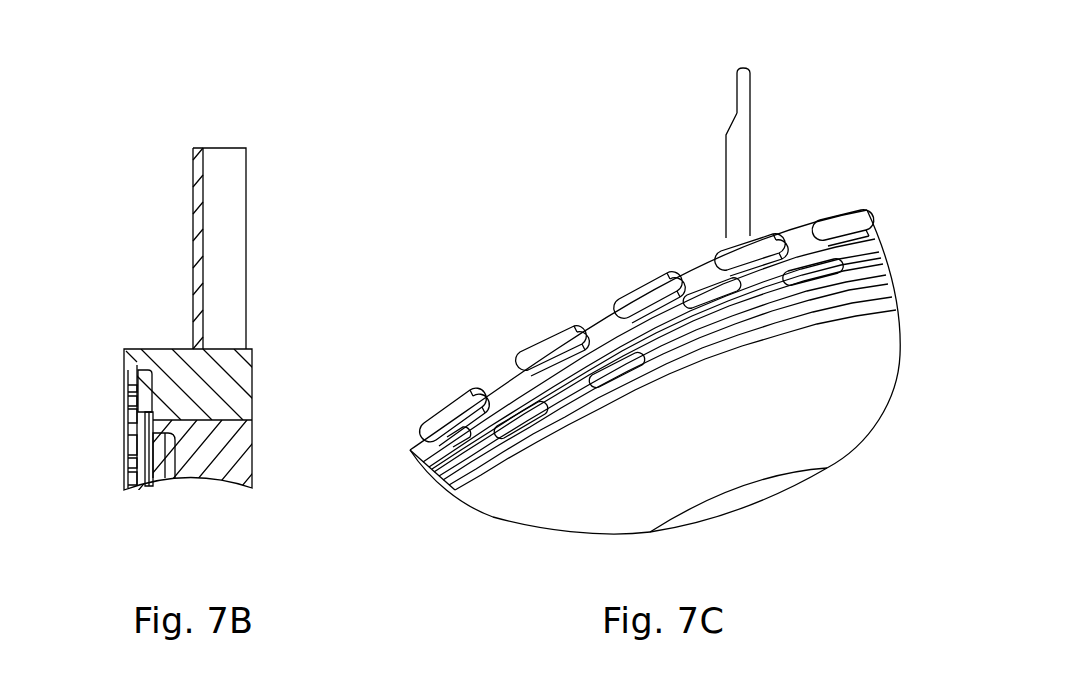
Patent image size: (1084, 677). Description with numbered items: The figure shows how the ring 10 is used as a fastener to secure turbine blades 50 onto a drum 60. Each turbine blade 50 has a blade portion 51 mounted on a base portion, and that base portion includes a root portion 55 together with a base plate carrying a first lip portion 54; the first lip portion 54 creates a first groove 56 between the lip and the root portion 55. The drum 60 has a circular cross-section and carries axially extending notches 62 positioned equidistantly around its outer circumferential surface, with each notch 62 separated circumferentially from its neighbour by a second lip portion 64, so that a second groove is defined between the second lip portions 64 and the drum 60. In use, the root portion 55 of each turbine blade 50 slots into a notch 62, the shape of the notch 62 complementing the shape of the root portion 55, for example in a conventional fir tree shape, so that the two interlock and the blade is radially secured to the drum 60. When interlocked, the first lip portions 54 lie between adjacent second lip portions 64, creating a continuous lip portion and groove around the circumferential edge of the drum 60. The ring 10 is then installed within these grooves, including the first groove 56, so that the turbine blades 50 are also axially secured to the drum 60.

In FIG. 7B, the ring 10 is at (130, 378).
In FIG. 7C, the ring 10 is at (872, 242).
In FIG. 7B, the turbine blade 50 is at (118, 163).
In FIG. 7C, the turbine blade 50 is at (770, 117).
In FIG. 7B, the blade portion 51 is at (237, 177).
In FIG. 7B, the first lip portion 54 is at (127, 386).
In FIG. 7B, the root portion 55 is at (235, 380).
In FIG. 7B, the first groove 56 is at (143, 368).
In FIG. 7B, the drum 60 is at (235, 458).
In FIG. 7C, the drum 60 is at (471, 357).
In FIG. 7C, the notch 62 is at (630, 368).
In FIG. 7C, the second lip portion 64 is at (638, 292).